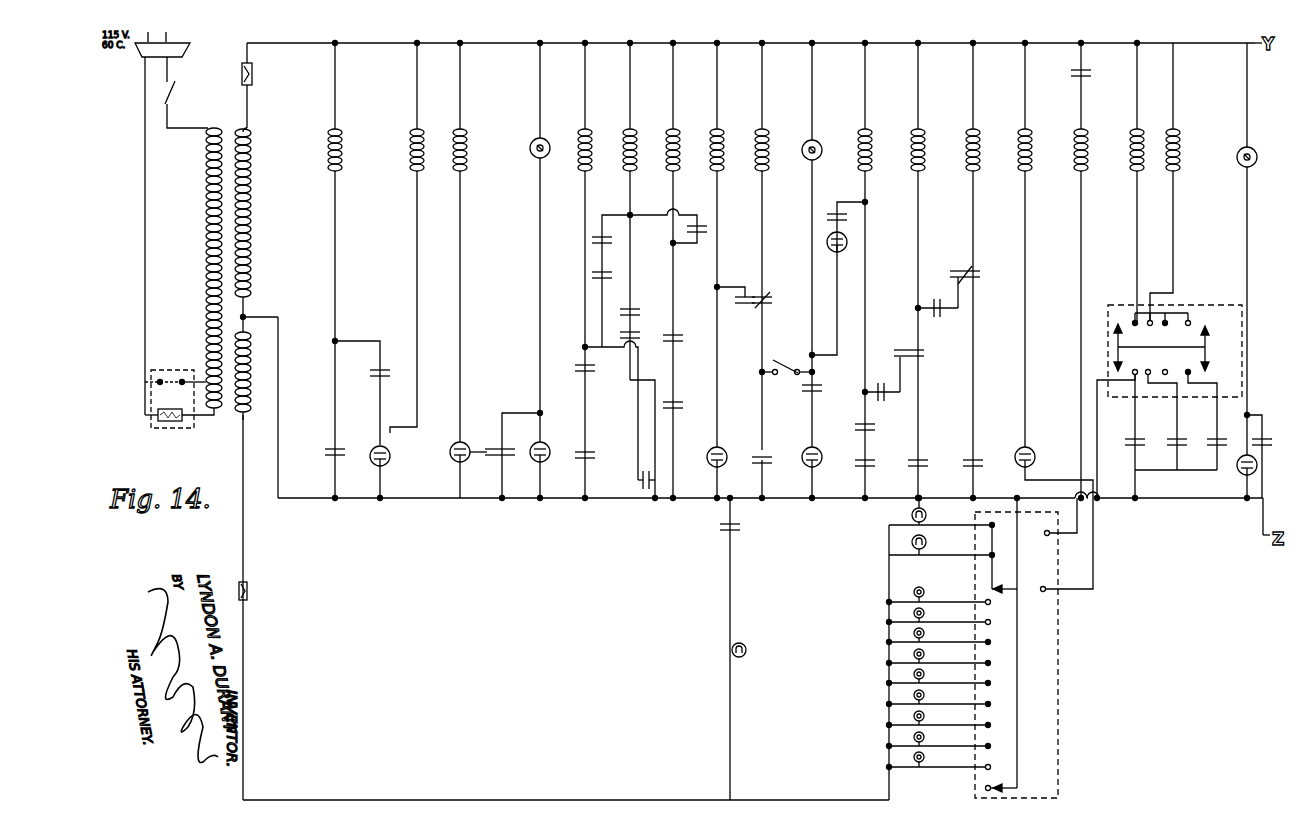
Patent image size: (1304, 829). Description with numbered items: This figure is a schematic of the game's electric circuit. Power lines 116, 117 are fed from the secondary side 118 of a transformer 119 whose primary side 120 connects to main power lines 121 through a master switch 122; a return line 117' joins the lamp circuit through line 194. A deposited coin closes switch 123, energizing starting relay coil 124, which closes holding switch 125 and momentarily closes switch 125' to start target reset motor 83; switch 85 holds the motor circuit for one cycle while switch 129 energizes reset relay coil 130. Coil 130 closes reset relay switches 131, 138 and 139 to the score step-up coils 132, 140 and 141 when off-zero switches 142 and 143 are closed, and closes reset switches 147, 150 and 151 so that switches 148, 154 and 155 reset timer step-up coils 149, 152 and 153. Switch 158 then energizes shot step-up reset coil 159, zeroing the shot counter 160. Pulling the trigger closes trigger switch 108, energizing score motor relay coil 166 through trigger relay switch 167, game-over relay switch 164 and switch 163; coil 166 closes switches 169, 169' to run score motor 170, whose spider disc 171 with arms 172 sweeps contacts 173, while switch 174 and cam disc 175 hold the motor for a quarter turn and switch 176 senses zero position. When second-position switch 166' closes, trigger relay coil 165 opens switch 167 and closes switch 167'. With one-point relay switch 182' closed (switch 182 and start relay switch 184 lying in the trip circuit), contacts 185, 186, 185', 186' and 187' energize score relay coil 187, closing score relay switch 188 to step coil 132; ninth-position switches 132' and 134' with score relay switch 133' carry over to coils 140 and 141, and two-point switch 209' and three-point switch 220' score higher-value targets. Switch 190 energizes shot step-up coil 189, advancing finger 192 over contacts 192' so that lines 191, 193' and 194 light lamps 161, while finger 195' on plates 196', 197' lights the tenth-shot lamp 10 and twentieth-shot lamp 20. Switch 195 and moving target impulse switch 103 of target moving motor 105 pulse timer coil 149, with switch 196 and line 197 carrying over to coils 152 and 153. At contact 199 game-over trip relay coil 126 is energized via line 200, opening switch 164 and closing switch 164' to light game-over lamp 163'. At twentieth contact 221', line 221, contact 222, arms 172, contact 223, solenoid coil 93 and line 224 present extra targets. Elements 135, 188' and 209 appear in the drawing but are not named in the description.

The power line 116 is at (385, 46).
The power line 117 is at (773, 440).
The line 117' is at (564, 620).
The secondary side of transformer 118 is at (252, 226).
The transformer 119 is at (250, 192).
The primary side of transformer 120 is at (200, 193).
The main power lines 121 is at (150, 132).
The master switch 122 is at (177, 85).
The coin switch 123 is at (345, 458).
The starting relay coil 124 is at (343, 162).
The starting relay switch 125 is at (374, 393).
The normally open starting relay switch 125' is at (520, 471).
The game-over trip relay coil 126 is at (1090, 178).
The normally open switch 129 is at (475, 460).
The reset relay coil 130 is at (468, 122).
The reset relay switch 131 is at (580, 470).
The score step-up relay coil 132 is at (569, 195).
The ninth-position 1–9 switch 132' is at (621, 305).
The score relay switch 133' is at (620, 330).
The ninth-position 10–90 switch 134' is at (670, 222).
The condenser 135 is at (570, 370).
The reset relay switch 138 is at (590, 283).
The reset relay switch 139 is at (678, 334).
The 10–90 score step-up coil 140 is at (636, 168).
The 100 score step-up coil 141 is at (681, 166).
The switch 142 is at (590, 242).
The switch 143 is at (678, 404).
The reset switch 147 is at (864, 466).
The switch 148 is at (860, 426).
The 1–9 timer step-up coil 149 is at (872, 170).
The reset relay switch 150 is at (926, 352).
The reset relay switch 151 is at (973, 278).
The 10–90 timer step-up coil 152 is at (924, 176).
The 100 timer step-up coil 153 is at (981, 174).
The switch 154 is at (923, 458).
The switch 155 is at (975, 456).
The normally open switch 158 is at (388, 468).
The shot step-up reset coil 159 is at (422, 166).
The shot counter 160 is at (1036, 722).
The incandescent lamps 161 is at (910, 736).
The switch 163 is at (652, 433).
The game-over relay light 163' is at (771, 623).
The game-over relay switch 164 is at (944, 238).
The game-over relay switch 164' is at (702, 569).
The trigger relay coil 165 is at (728, 166).
The score motor relay coil 166 is at (777, 246).
The second-position score motor switch 166' is at (730, 465).
The trigger relay switch 167 is at (736, 281).
The trigger relay switch 167' is at (747, 317).
The score motor relay switch 169 is at (1264, 444).
The score motor relay switch 169' is at (746, 479).
The score motor 170 is at (1236, 156).
The spider disc 171 is at (1114, 340).
The arms 172 is at (1102, 363).
The contacts 173 is at (1138, 311).
The normally open switch 174 is at (1243, 454).
The cam disc 175 is at (1228, 302).
The switch 176 is at (1242, 472).
The one-point relay switch 182 is at (1120, 431).
The one-point relay switch 182' is at (1155, 454).
The start relay switch 184 is at (472, 450).
The contact point 185 is at (1152, 336).
The contact point 185' is at (1179, 298).
The contact point 186 is at (1162, 361).
The contact point 186' is at (1190, 402).
The score relay coil 187 is at (1149, 181).
The contact 187' is at (1208, 299).
The score relay switch 188 is at (643, 526).
The armature 188' is at (1219, 358).
The shot step-up coil 189 is at (1034, 182).
The normally open switch 190 is at (1030, 447).
The line 191 is at (1024, 616).
The movable contact finger 192 is at (1016, 774).
The stationary contacts 192' is at (1020, 751).
The line 193' is at (946, 785).
The line 194 is at (886, 794).
The normally open switch 195 is at (847, 250).
The contact finger 195' is at (980, 577).
The switch 196 is at (880, 360).
The 10–90 switch 196' is at (938, 282).
The line 197 is at (880, 284).
The contact plate 197' is at (966, 513).
The contact 199 is at (1048, 538).
The line 200 is at (1078, 270).
The condenser 209 is at (1165, 431).
The two-point relay switch 209' is at (1191, 456).
The three-point relay switch 220' is at (1206, 433).
The line 221 is at (1081, 582).
The twentieth contact 221' is at (1072, 609).
The contact 222 is at (1156, 437).
The contact 223 is at (1160, 309).
The line 224 is at (1178, 105).
The target reset motor 83 is at (534, 154).
The switch 85 is at (550, 446).
The solenoid coil 93 is at (1178, 170).
The moving target impulse switch 103 is at (834, 255).
The target moving motor 105 is at (816, 162).
The trigger switch 108 is at (792, 362).
The tenth-shot lamp indicia 10 is at (942, 557).
The twentieth-shot lamp indicia 20 is at (942, 512).